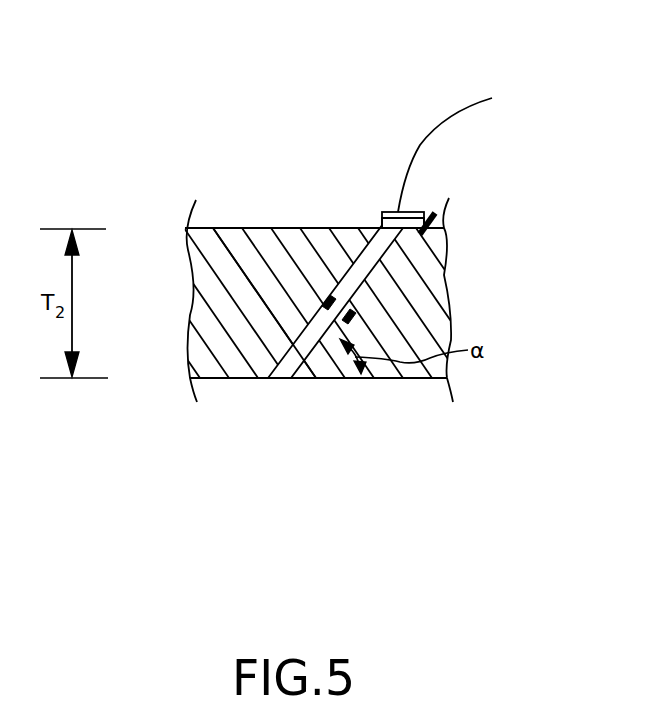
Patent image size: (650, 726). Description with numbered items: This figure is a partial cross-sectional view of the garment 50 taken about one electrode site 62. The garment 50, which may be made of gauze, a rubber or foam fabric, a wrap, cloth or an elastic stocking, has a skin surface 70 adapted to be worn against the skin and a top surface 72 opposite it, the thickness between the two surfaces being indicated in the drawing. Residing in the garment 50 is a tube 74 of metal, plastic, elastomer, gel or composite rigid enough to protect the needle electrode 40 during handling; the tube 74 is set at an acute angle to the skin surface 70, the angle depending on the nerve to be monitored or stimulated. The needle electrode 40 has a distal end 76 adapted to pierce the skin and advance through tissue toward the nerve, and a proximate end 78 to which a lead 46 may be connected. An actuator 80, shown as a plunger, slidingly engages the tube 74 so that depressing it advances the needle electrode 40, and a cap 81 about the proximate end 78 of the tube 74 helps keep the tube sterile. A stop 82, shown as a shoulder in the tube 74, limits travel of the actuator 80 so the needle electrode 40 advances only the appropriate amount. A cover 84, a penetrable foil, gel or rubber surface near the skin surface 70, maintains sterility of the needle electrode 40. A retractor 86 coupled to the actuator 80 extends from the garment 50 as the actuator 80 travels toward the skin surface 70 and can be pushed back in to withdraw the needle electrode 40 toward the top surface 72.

The needle electrode 40 is at (356, 228).
The lead 46 is at (467, 103).
The garment 50 is at (416, 395).
The electrode site 62 is at (416, 212).
The skin surface 70 is at (233, 378).
The top surface 72 is at (213, 228).
The tube 74 is at (392, 268).
The distal end 76 is at (294, 379).
The proximate end 78 is at (398, 242).
The actuator 80 is at (390, 212).
The cap 81 is at (410, 212).
The stop 82 is at (352, 319).
The cover 84 is at (274, 392).
The retractor 86 is at (438, 220).